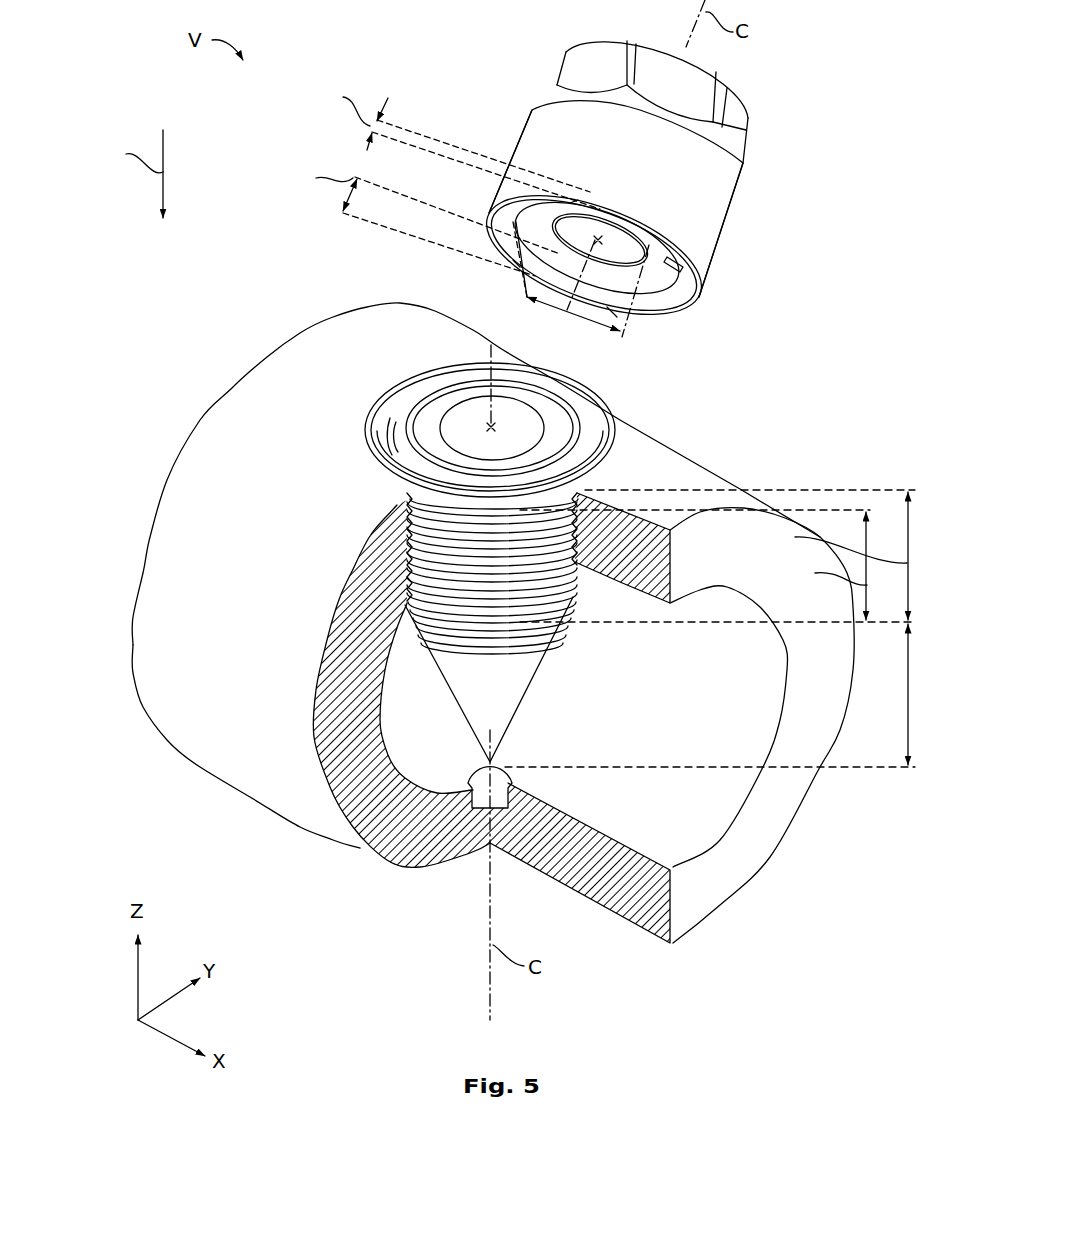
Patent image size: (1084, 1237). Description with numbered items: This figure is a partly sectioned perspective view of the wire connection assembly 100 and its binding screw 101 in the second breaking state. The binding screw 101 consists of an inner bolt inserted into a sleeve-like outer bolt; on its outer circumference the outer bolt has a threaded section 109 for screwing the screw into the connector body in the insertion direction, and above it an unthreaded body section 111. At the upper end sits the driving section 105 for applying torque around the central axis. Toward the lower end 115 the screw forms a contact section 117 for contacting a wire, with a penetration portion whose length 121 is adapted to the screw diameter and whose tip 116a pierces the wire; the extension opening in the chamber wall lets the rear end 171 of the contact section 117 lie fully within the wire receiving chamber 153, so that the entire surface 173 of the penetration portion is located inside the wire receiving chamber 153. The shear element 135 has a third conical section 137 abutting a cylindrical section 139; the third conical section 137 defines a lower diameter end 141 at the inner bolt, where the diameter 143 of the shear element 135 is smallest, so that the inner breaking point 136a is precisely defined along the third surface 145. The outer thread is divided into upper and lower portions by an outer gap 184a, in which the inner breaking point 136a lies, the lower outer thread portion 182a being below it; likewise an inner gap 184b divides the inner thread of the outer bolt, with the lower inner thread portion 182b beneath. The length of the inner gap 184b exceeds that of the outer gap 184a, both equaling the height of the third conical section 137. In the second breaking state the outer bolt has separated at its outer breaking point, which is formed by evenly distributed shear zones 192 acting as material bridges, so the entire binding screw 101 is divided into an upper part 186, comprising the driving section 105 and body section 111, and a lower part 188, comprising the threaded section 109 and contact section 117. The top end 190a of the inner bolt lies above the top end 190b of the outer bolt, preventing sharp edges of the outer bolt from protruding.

The wire connection assembly 100 is at (251, 126).
The binding screw 101 is at (779, 68).
The driving section 105 is at (570, 49).
The threaded section 109 is at (468, 580).
The body section 111 is at (717, 220).
The lower end 115 is at (391, 842).
The tip 116a is at (483, 805).
The contact section 117 is at (433, 697).
The length 121 is at (907, 717).
The shear element 135 is at (593, 281).
The inner breaking point 136a is at (652, 287).
The third conical section 137 is at (670, 258).
The cylindrical section 139 is at (548, 407).
The lower diameter end 141 is at (555, 240).
The diameter 143 is at (568, 312).
The third surface 145 is at (642, 265).
The wire receiving chamber 153 is at (670, 800).
The rear end 171 is at (452, 618).
The surface 173 is at (380, 752).
The lower outer thread portion 182a is at (392, 428).
The lower inner thread portion 182b is at (392, 435).
The outer gap 184a is at (503, 226).
The inner gap 184b is at (497, 226).
The upper part 186 is at (519, 140).
The lower part 188 is at (403, 528).
The top end of the inner bolt 190a is at (557, 438).
The top end of the outer bolt 190b is at (605, 440).
The shear zones 192 is at (520, 268).